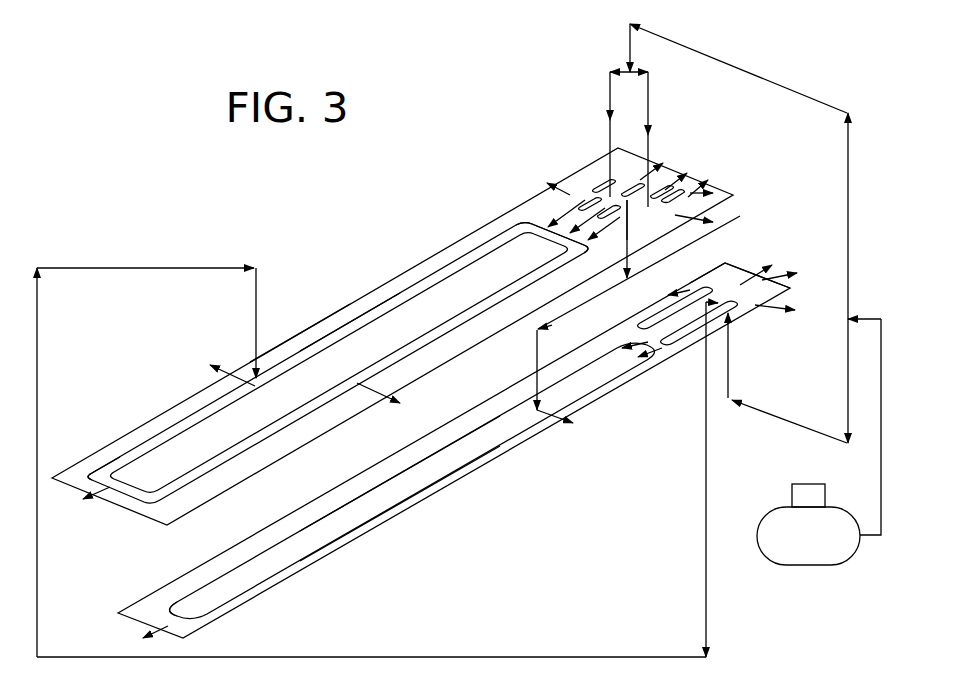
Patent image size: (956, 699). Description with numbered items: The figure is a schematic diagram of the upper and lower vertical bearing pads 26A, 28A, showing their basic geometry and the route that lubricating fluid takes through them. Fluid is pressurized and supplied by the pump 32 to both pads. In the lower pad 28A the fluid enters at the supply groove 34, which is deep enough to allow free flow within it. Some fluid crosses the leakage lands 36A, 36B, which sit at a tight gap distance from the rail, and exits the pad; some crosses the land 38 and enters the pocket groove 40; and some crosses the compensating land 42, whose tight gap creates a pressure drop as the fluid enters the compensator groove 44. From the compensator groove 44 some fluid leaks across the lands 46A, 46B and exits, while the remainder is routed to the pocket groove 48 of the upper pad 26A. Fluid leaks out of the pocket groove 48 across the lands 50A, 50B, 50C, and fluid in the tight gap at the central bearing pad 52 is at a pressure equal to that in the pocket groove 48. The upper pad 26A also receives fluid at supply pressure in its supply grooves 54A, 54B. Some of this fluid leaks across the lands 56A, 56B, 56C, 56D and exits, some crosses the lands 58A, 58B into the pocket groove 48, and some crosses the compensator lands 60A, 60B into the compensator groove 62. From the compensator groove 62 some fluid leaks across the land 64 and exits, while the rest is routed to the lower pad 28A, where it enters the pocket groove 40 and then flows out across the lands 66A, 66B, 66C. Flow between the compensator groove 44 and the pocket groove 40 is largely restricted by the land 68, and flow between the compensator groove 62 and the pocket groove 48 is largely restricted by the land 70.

The vertical bearing pad 26A is at (410, 243).
The vertical bearing pad 28A is at (527, 462).
The pump 32 is at (805, 548).
The supply groove 34 is at (737, 315).
The leakage land 36A is at (770, 275).
The leakage land 36B is at (750, 317).
The land 38 is at (693, 353).
The pocket groove 40 is at (323, 528).
The compensating land 42 is at (722, 282).
The compensator groove 44 is at (723, 283).
The land 46A is at (737, 263).
The land 46B is at (666, 321).
The pocket groove 48 is at (190, 420).
The land 50A is at (423, 358).
The land 50B is at (362, 332).
The land 50C is at (125, 497).
The central bearing pad 52 is at (345, 322).
The supply groove 54A is at (600, 150).
The supply groove 54B is at (728, 165).
The land 56A is at (575, 195).
The land 56B is at (672, 218).
The land 56C is at (655, 165).
The land 56D is at (712, 195).
The land 58A is at (540, 186).
The land 58B is at (632, 250).
The compensator land 60A is at (580, 185).
The compensator land 60B is at (660, 240).
The compensator groove 62 is at (640, 150).
The land 64 is at (685, 165).
The land 66A is at (427, 492).
The land 66B is at (150, 620).
The land 66C is at (448, 431).
The land 68 is at (590, 318).
The land 70 is at (520, 210).